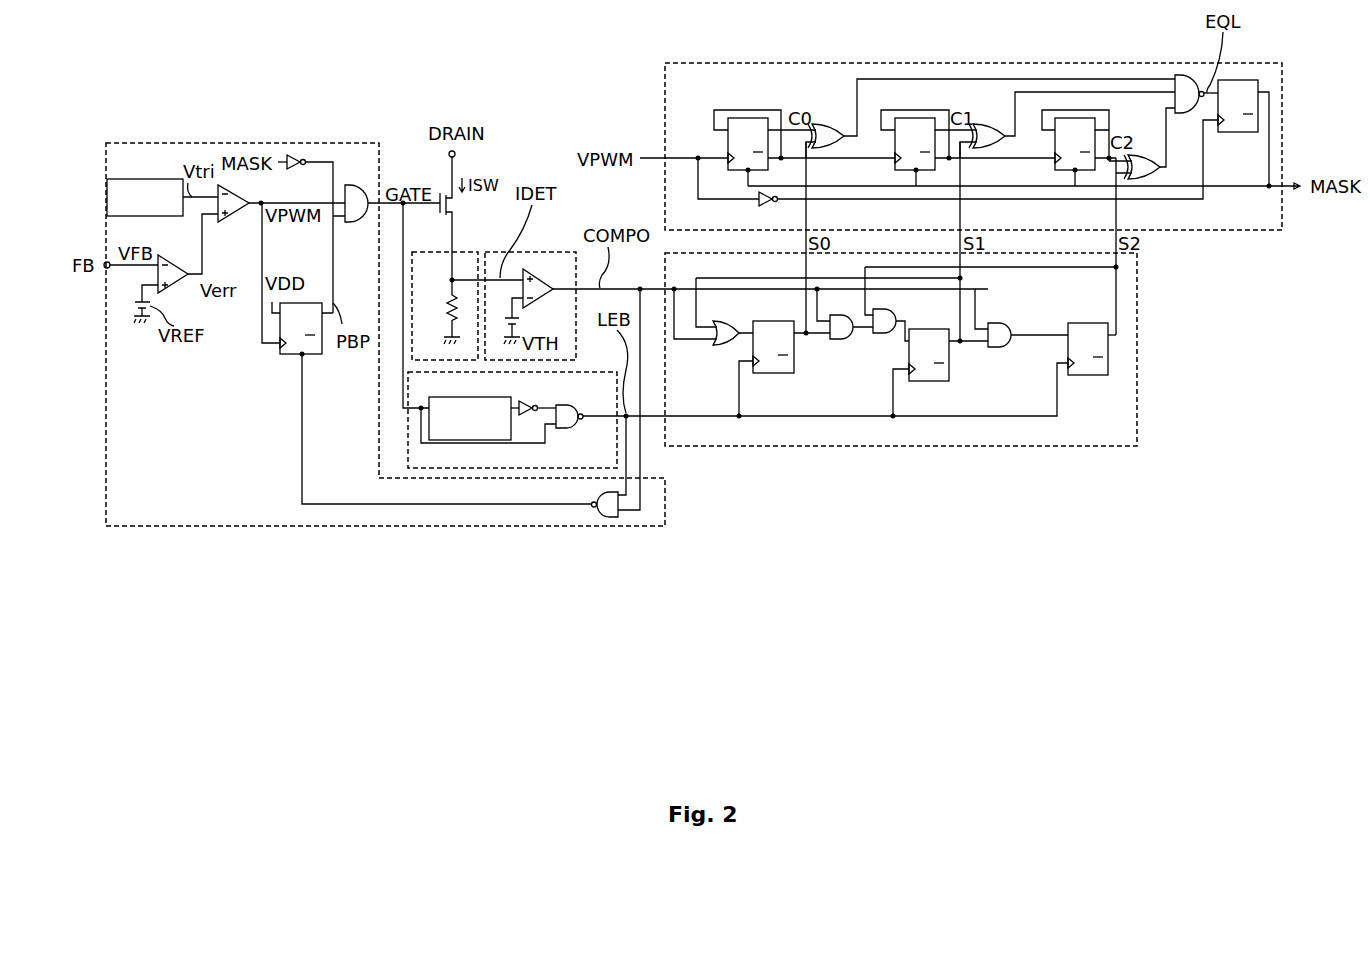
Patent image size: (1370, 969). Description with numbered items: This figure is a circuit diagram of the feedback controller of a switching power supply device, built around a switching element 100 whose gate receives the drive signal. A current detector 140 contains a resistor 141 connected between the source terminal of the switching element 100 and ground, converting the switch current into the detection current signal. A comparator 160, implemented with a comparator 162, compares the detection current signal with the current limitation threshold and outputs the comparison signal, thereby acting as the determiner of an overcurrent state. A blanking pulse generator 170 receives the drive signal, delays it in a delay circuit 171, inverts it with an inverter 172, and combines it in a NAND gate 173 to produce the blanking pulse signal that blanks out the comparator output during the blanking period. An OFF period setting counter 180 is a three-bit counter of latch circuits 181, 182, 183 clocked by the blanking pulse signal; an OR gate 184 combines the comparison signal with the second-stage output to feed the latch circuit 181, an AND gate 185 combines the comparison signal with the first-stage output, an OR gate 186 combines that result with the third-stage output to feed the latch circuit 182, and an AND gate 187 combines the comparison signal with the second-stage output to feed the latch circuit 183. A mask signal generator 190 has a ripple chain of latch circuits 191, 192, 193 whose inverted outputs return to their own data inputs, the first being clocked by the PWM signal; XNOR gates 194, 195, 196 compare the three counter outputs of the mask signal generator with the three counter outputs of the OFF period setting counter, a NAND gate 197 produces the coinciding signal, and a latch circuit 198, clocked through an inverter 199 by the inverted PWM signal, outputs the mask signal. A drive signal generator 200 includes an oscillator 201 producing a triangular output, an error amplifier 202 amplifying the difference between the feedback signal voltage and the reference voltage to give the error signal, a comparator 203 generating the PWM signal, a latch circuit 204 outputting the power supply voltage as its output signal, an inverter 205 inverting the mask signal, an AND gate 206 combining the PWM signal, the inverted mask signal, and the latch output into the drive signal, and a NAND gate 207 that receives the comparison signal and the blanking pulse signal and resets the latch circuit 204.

The switching element 100 is at (447, 193).
The current detector 140 is at (466, 250).
The resistor 141 is at (447, 301).
The comparator 160 is at (553, 250).
The comparator 162 is at (545, 270).
The blanking pulse generator 170 is at (594, 372).
The delay circuit 171 is at (444, 397).
The inverter 172 is at (526, 401).
The NAND gate 173 is at (575, 405).
The OFF period setting counter 180 is at (767, 447).
The latch circuit 181 is at (781, 374).
The latch circuit 182 is at (931, 382).
The latch circuit 183 is at (1081, 376).
The OR gate 184 is at (719, 345).
The AND gate 185 is at (840, 339).
The OR gate 186 is at (886, 309).
The AND gate 187 is at (1005, 347).
The mask signal generator 190 is at (724, 63).
The latch circuit 191 is at (727, 148).
The latch circuit 192 is at (894, 150).
The latch circuit 193 is at (1054, 150).
The XNOR gate 194 is at (826, 124).
The XNOR gate 195 is at (986, 124).
The XNOR gate 196 is at (1140, 154).
The NAND gate 197 is at (1187, 75).
The latch circuit 198 is at (1252, 80).
The inverter 199 is at (767, 206).
The drive signal generator 200 is at (124, 143).
The oscillator 201 is at (147, 179).
The error amplifier 202 is at (178, 251).
The comparator 203 is at (233, 222).
The latch circuit 204 is at (315, 355).
The inverter 205 is at (295, 170).
The AND gate 206 is at (356, 222).
The NAND gate 207 is at (606, 518).